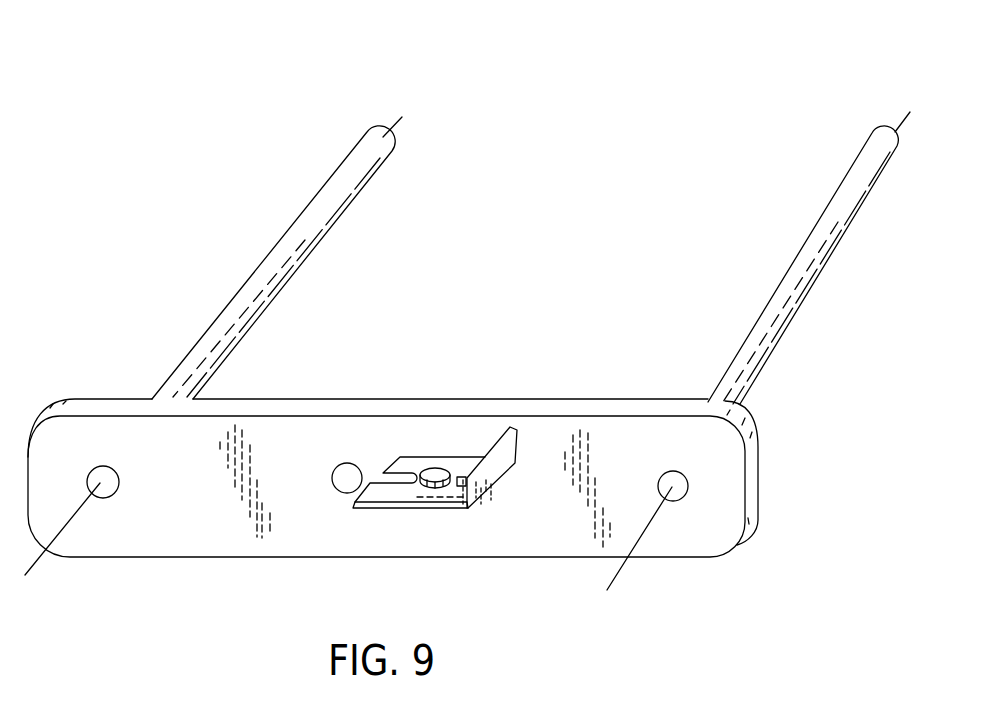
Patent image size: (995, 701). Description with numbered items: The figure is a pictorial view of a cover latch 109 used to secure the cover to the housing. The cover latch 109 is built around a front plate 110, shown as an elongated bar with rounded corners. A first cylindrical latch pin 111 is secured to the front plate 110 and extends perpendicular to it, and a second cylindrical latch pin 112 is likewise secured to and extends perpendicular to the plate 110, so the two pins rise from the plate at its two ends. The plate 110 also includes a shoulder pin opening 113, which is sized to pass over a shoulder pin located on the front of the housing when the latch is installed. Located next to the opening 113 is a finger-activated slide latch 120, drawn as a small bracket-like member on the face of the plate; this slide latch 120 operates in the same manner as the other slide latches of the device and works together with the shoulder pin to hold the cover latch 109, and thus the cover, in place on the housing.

The cover latch 109 is at (467, 364).
The front plate 110 is at (683, 543).
The first cylindrical latch pin 111 is at (784, 330).
The second cylindrical latch pin 112 is at (318, 236).
The shoulder pin opening 113 is at (333, 490).
The finger-activated slide latch 120 is at (438, 428).